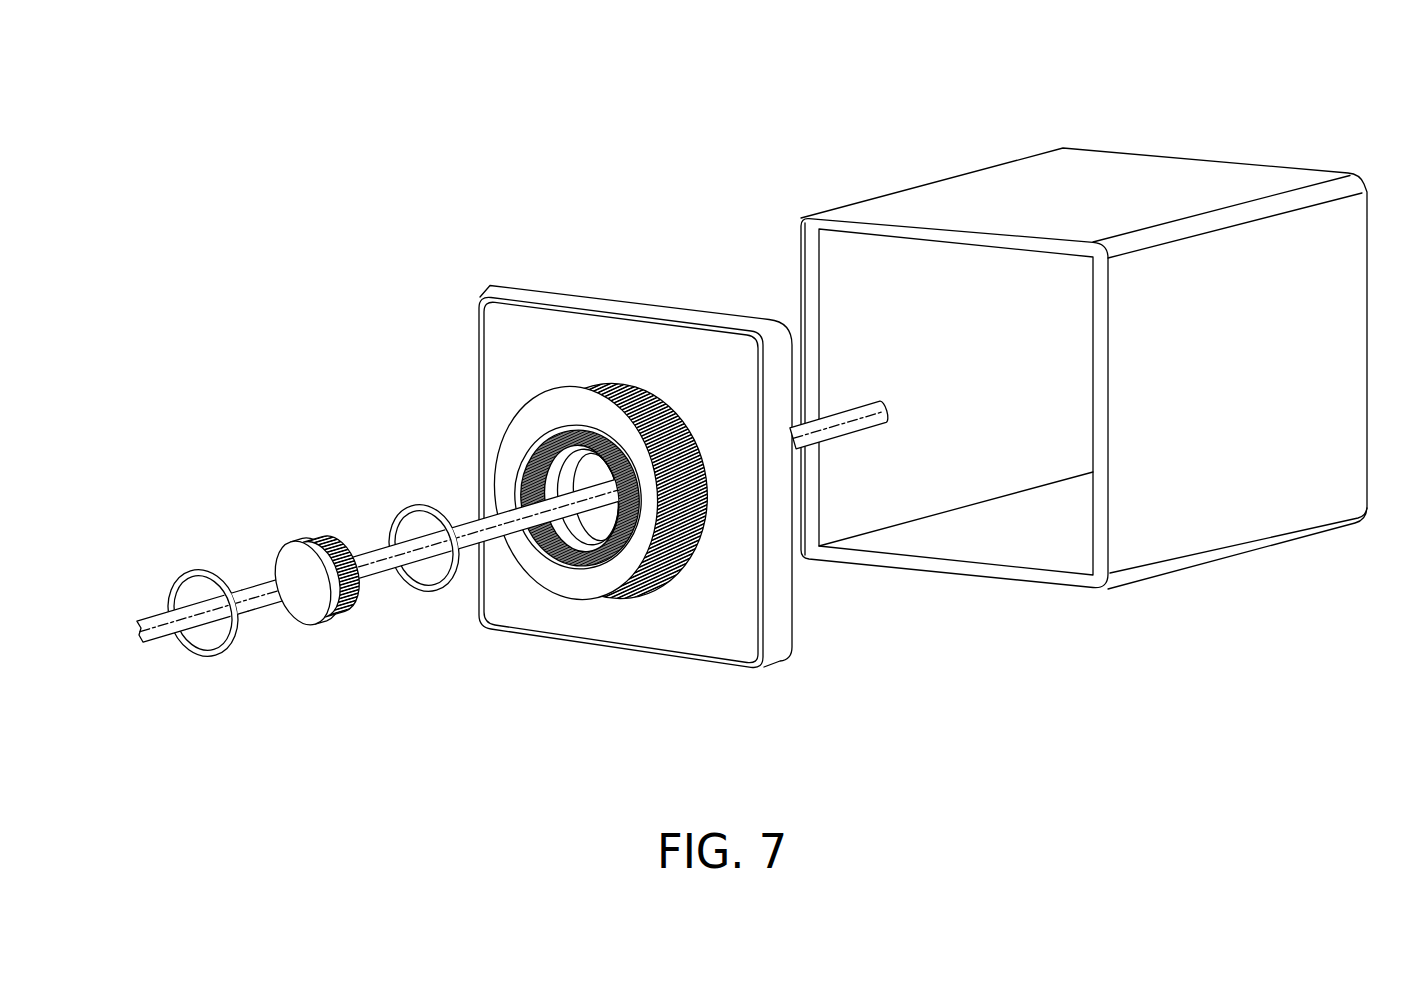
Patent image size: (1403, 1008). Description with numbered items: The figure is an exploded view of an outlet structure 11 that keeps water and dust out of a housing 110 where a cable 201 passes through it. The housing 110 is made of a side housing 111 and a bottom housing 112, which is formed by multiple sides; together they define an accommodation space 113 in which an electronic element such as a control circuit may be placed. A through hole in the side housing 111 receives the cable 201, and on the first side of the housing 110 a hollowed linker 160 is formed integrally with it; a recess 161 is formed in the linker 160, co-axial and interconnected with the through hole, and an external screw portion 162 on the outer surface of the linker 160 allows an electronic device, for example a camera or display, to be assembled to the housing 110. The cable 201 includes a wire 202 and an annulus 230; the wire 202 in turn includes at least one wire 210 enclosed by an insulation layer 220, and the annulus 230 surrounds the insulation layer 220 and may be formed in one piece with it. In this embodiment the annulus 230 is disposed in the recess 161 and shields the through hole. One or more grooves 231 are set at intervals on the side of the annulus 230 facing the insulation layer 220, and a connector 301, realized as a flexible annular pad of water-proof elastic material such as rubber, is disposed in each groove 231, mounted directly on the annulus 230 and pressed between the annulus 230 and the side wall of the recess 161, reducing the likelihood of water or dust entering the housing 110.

The outlet structure 11 is at (1359, 77).
The housing 110 is at (313, 114).
The side housing 111 is at (599, 305).
The bottom housing 112 is at (1013, 172).
The accommodation space 113 is at (1047, 550).
The linker 160 is at (547, 568).
The recess 161 is at (568, 557).
The external screw portion 162 is at (631, 597).
The cable 201 is at (340, 776).
The wire 202 is at (293, 733).
The wire 210 is at (163, 645).
The insulation layer 220 is at (258, 598).
The annulus 230 is at (307, 603).
The groove 231 is at (360, 581).
The connector 301 is at (198, 570).